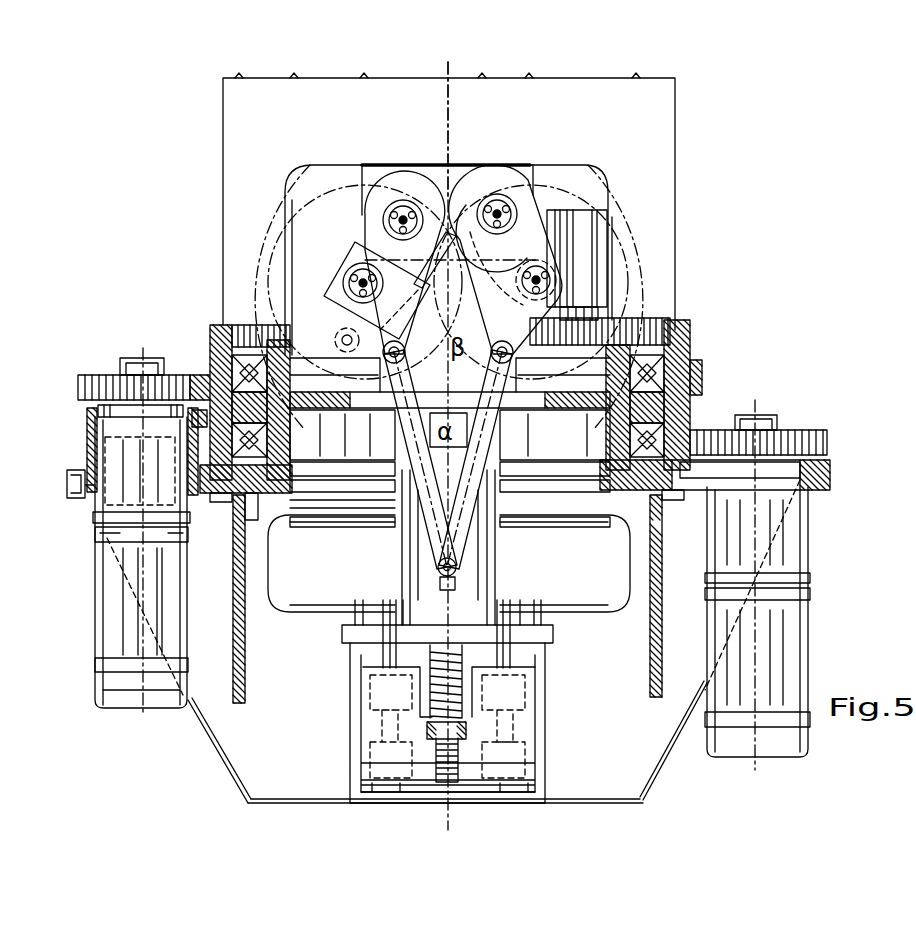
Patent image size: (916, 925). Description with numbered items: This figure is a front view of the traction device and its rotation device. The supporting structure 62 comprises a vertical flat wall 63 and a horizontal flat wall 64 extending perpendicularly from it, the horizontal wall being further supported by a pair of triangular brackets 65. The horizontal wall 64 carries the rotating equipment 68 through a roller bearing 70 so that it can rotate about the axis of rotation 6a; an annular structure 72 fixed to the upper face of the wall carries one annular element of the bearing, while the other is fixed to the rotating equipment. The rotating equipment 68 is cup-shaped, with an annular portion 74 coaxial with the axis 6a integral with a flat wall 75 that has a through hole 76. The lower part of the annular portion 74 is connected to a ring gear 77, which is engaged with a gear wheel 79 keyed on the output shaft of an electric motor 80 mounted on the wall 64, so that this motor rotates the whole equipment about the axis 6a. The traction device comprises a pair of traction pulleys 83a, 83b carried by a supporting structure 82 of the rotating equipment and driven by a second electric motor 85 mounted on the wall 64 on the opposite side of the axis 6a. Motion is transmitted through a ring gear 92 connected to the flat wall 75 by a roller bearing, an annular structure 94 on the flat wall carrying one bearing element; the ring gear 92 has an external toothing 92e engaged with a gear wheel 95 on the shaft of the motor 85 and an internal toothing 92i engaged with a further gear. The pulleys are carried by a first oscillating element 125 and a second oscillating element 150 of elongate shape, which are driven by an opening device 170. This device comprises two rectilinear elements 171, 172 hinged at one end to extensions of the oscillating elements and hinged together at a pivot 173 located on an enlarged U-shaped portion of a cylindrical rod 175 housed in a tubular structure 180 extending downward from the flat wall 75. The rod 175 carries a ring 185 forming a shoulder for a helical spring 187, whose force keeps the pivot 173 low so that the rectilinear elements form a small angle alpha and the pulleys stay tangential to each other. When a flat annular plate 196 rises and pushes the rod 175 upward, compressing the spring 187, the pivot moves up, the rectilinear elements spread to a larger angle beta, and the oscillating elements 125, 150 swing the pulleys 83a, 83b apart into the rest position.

The axis of rotation 6a is at (447, 128).
The supporting structure 62 is at (205, 748).
The vertical flat wall 63 is at (303, 732).
The horizontal flat wall 64 is at (263, 497).
The brackets 65 is at (247, 668).
The rotating equipment 68 is at (737, 373).
The roller bearing 70 is at (242, 505).
The annular structure 72 is at (296, 522).
The annular portion 74 is at (678, 420).
The flat wall 75 is at (352, 372).
The through hole 76 is at (548, 422).
The ring gear 77 is at (224, 492).
The gear wheel 79 is at (822, 440).
The electric motor 80 is at (765, 668).
The supporting structure 82 is at (538, 156).
The traction pulley 83a is at (625, 240).
The traction pulley 83b is at (327, 207).
The electric motor 85 is at (110, 610).
The ring gear 92 is at (214, 344).
The external toothing 92e is at (698, 372).
The internal toothing 92i is at (652, 316).
The annular structure 94 is at (258, 323).
The gear wheel 95 is at (118, 385).
The first oscillating element 125 is at (503, 235).
The second oscillating element 150 is at (438, 250).
The opening device 170 is at (510, 598).
The rectilinear element 171 is at (470, 483).
The rectilinear element 172 is at (427, 492).
The pivot 173 is at (455, 558).
The cylindrical rod 175 is at (460, 670).
The tubular structure 180 is at (400, 580).
The ring 185 is at (463, 732).
The helical spring 187 is at (435, 656).
The flat annular plate 196 is at (470, 797).